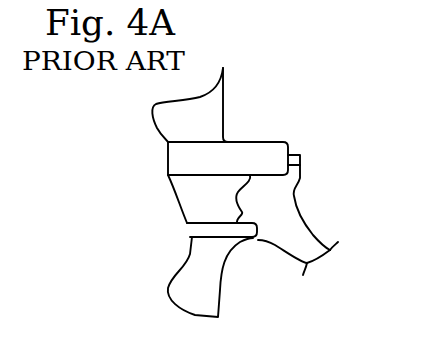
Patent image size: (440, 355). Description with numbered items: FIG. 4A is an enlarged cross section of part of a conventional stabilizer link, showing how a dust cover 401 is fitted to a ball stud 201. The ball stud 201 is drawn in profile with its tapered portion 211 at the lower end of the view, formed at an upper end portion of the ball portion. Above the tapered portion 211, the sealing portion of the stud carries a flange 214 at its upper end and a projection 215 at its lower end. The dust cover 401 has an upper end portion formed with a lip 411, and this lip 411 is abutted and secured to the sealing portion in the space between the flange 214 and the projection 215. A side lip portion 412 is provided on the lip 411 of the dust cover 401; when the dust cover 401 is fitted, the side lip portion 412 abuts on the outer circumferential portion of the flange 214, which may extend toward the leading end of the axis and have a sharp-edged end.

The ball stud 201 is at (228, 93).
The flange 214 is at (250, 150).
The projection 215 is at (240, 242).
The tapered portion 211 is at (207, 285).
The dust cover 401 is at (317, 224).
The lip 411 is at (278, 203).
The side lip portion 412 is at (302, 160).